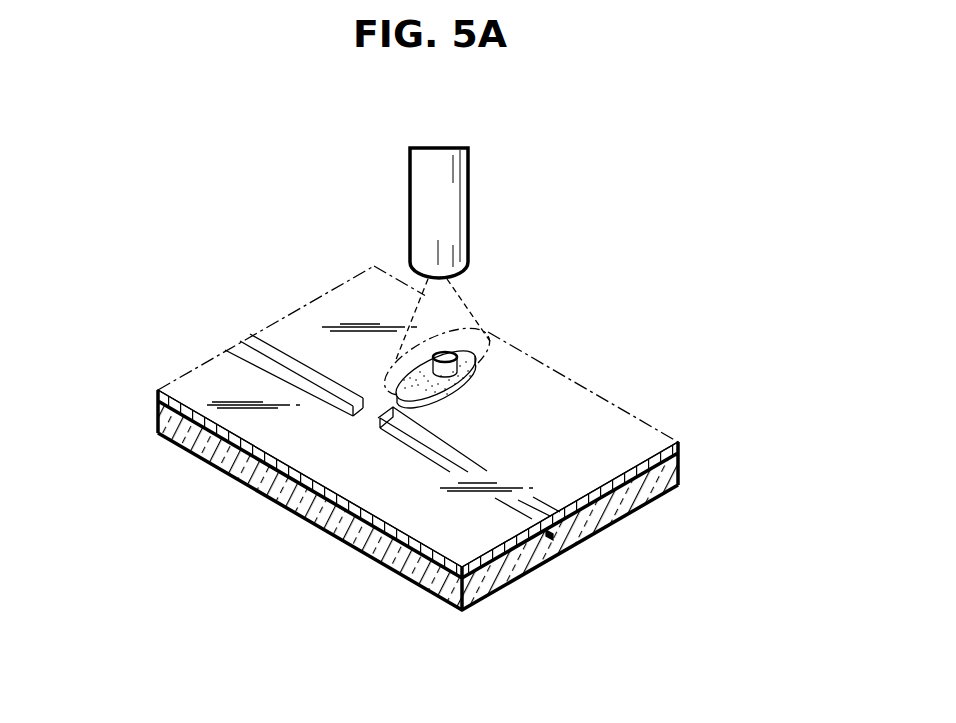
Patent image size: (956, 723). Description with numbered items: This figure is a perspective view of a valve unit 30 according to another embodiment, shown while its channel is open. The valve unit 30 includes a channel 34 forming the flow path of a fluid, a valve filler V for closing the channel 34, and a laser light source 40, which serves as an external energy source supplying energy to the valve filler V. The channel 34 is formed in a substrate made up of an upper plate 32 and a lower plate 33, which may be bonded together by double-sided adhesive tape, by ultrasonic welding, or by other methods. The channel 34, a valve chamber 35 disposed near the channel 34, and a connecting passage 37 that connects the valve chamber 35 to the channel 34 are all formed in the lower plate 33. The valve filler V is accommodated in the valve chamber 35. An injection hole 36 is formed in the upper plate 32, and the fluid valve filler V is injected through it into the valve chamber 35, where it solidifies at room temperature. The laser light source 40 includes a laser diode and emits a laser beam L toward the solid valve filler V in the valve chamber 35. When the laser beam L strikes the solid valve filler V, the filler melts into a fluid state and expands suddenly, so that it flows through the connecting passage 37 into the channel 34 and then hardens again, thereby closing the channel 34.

The valve unit 30 is at (171, 291).
The upper plate 32 is at (680, 448).
The lower plate 33 is at (762, 425).
The channel 34 is at (532, 515).
The valve chamber 35 is at (466, 380).
The injection hole 36 is at (448, 352).
The connecting passage 37 is at (377, 408).
The laser light source 40 is at (466, 207).
The laser beam L is at (415, 307).
The valve filler V is at (383, 340).